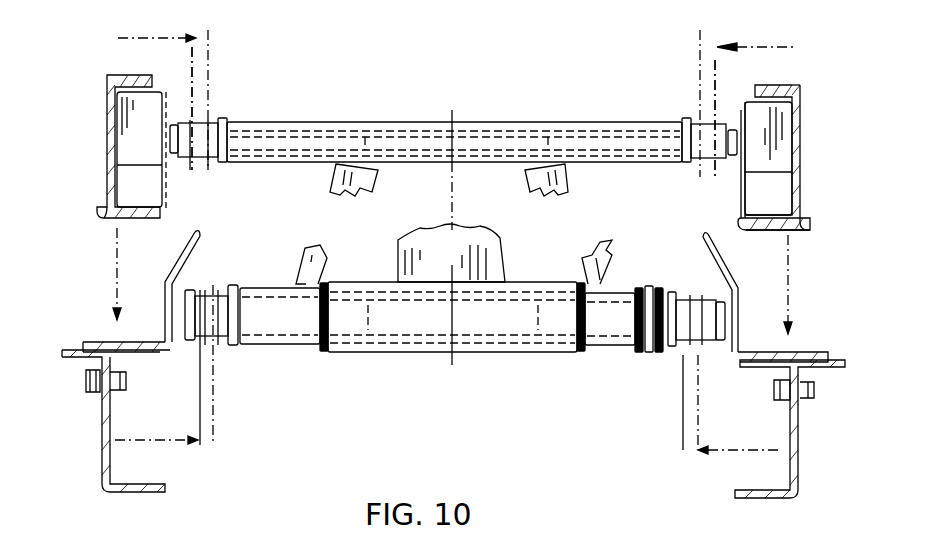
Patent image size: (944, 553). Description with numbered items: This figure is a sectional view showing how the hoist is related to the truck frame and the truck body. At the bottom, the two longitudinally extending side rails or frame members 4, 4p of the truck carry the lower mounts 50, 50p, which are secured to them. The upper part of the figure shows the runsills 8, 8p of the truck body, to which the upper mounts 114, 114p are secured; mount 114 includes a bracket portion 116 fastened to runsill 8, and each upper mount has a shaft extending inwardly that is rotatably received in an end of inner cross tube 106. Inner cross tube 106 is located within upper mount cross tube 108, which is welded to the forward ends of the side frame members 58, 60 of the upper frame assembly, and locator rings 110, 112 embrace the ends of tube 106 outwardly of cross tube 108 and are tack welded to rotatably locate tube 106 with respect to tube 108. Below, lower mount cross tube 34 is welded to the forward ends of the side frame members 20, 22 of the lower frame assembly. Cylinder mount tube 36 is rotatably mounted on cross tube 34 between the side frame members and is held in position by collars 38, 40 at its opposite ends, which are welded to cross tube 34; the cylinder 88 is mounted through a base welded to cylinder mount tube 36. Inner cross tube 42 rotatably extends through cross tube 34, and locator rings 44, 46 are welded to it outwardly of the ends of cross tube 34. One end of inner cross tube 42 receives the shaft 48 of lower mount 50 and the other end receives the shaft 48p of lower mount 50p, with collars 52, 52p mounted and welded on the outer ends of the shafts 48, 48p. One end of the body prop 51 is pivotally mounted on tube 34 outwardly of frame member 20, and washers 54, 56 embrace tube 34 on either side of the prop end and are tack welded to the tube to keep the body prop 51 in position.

The frame member 4 is at (796, 458).
The frame member 4p is at (100, 452).
The runsill 8 is at (797, 173).
The runsill 8p is at (107, 175).
The side frame member 20 is at (615, 245).
The side frame member 22 is at (318, 255).
The lower mount cross tube 34 is at (297, 320).
The cylinder mount tube 36 is at (388, 336).
The collar 38 is at (579, 354).
The collar 40 is at (322, 354).
The inner cross tube 42 is at (702, 337).
The locator ring 44 is at (671, 290).
The locator ring 46 is at (232, 290).
The shaft 48 is at (726, 322).
The shaft 48p is at (182, 322).
The lower mount 50 is at (806, 336).
The lower mount 50p is at (100, 328).
The body prop 51 is at (647, 356).
The collar 52 is at (735, 300).
The collar 52p is at (180, 298).
The washer 54 is at (634, 356).
The washer 56 is at (657, 356).
The side frame member 58 is at (562, 188).
The side frame member 60 is at (330, 186).
The cylinder 88 is at (472, 258).
The inner cross tube 106 is at (196, 152).
The upper mount cross tube 108 is at (448, 130).
The locator ring 110 is at (685, 126).
The locator ring 112 is at (223, 120).
The upper mount 114 is at (738, 105).
The upper mount 114p is at (170, 96).
The bracket portion 116 is at (790, 232).